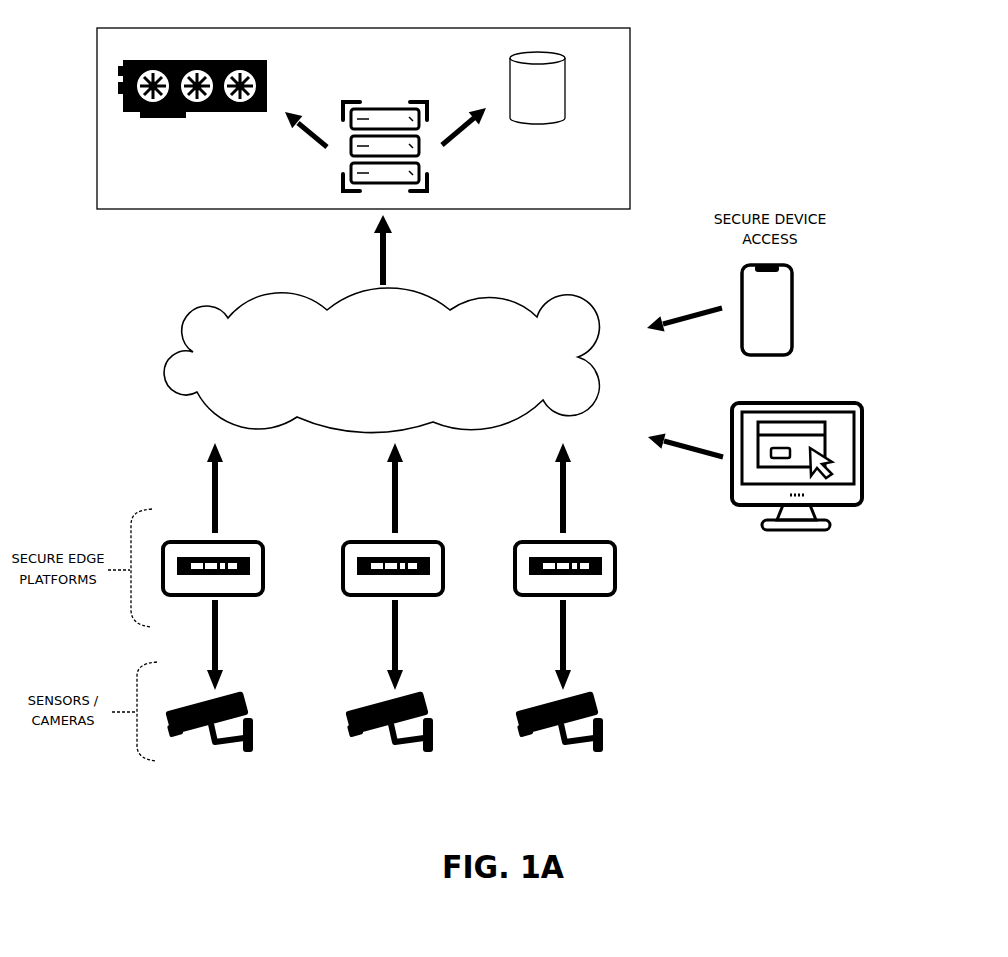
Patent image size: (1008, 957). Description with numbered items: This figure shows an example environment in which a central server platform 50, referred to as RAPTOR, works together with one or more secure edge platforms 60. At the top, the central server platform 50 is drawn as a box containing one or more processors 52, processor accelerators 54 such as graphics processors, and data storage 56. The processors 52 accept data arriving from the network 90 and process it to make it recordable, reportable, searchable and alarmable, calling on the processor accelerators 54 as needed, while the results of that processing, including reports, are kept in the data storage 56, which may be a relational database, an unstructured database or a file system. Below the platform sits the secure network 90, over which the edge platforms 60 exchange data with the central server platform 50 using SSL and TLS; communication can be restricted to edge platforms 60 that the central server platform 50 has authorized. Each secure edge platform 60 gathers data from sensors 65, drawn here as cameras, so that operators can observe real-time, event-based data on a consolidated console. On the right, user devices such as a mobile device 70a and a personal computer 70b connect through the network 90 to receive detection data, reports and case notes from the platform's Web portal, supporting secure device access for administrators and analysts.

The central server platform 50 is at (648, 76).
The processors 52 is at (433, 182).
The processor accelerators 54 is at (272, 85).
The data storage 56 is at (537, 88).
The secure edge platform 60 is at (622, 568).
The sensors 65 is at (616, 694).
The mobile device 70a is at (802, 289).
The personal computer 70b is at (870, 462).
The secure network 90 is at (381, 360).